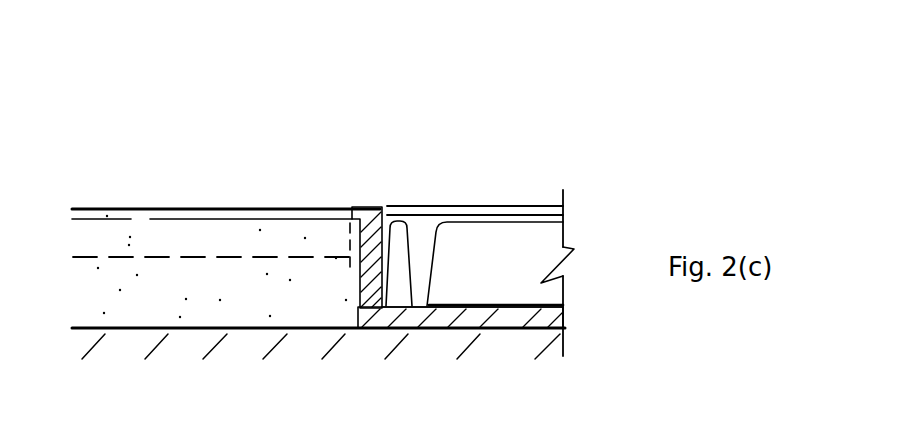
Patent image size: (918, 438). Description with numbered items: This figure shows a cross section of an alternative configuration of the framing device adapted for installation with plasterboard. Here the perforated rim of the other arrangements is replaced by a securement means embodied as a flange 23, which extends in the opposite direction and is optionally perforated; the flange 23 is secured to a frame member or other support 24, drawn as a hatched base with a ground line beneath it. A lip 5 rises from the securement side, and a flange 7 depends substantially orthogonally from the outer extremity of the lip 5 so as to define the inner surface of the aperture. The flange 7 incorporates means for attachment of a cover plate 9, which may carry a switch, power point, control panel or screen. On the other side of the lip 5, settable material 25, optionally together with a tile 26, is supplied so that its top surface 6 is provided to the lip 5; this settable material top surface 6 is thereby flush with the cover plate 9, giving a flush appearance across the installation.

The lip 5 is at (377, 199).
The layer of settable material / surface finish 6 is at (195, 208).
The flange 7 is at (389, 272).
The cover plate 9 is at (510, 205).
The flange (securement means) 23 is at (441, 334).
The frame member or support 24 is at (540, 397).
The settable material 25 is at (318, 271).
The tile 26 is at (213, 245).